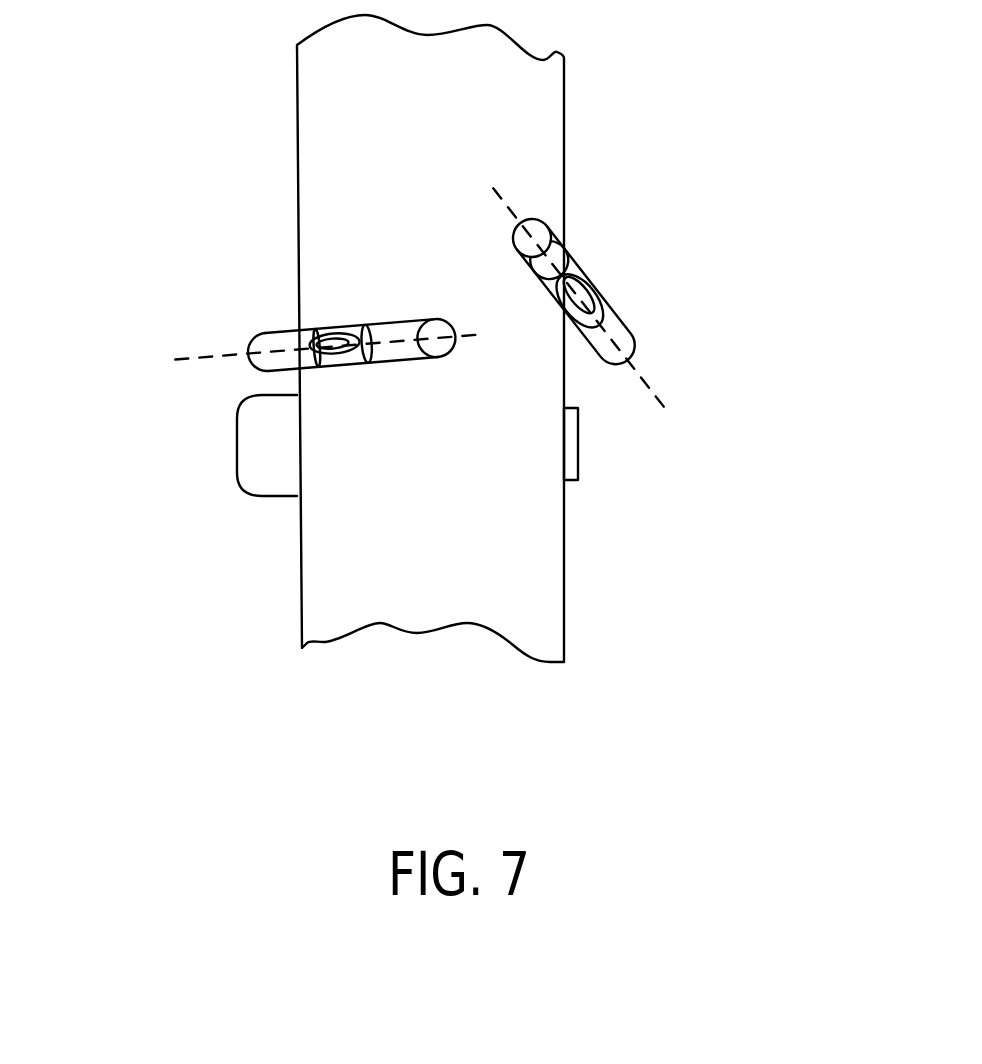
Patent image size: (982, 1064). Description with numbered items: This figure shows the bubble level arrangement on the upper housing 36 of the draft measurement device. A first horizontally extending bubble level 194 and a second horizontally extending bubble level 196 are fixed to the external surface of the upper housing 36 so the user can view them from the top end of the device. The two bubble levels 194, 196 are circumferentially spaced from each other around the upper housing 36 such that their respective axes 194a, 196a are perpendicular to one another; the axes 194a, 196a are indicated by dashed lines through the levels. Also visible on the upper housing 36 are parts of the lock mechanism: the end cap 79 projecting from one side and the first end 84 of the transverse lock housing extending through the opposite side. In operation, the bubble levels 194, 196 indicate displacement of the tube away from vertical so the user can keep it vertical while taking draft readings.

The upper housing 36 is at (550, 98).
The first horizontally extending bubble level 194 is at (622, 315).
The axis of first bubble level 194a is at (663, 394).
The second horizontally extending bubble level 196 is at (278, 337).
The axis of second bubble level 196a is at (185, 360).
The end cap 79 is at (250, 443).
The first end of lock housing 84 is at (578, 441).